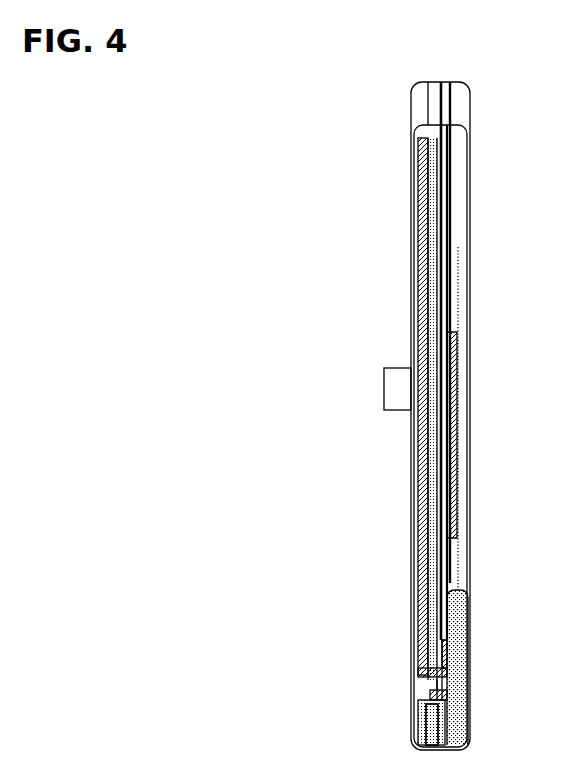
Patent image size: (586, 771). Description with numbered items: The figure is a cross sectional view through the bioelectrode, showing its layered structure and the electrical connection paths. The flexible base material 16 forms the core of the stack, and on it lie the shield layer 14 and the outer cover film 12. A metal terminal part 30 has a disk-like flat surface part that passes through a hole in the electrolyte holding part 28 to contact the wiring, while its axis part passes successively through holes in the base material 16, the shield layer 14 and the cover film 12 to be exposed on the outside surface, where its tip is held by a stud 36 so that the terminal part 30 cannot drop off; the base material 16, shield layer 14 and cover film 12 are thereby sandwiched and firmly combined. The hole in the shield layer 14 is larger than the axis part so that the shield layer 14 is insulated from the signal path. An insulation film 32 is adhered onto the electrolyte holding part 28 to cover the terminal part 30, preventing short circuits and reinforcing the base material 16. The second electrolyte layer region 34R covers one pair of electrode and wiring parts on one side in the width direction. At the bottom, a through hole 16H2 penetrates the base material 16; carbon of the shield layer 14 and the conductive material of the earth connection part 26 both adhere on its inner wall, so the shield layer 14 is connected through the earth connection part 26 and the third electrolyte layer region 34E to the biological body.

The cover film 12 is at (412, 478).
The shield layer 14 is at (418, 232).
The base material 16 is at (440, 158).
The through hole 16H2 is at (432, 693).
The earth connection part 26 is at (452, 732).
The electrolyte holding part 28 is at (452, 212).
The terminal part 30 is at (449, 428).
The insulation film 32 is at (466, 368).
The second electrolyte layer region 34R is at (464, 304).
The third electrolyte layer region 34E is at (470, 645).
The stud 36 is at (384, 386).